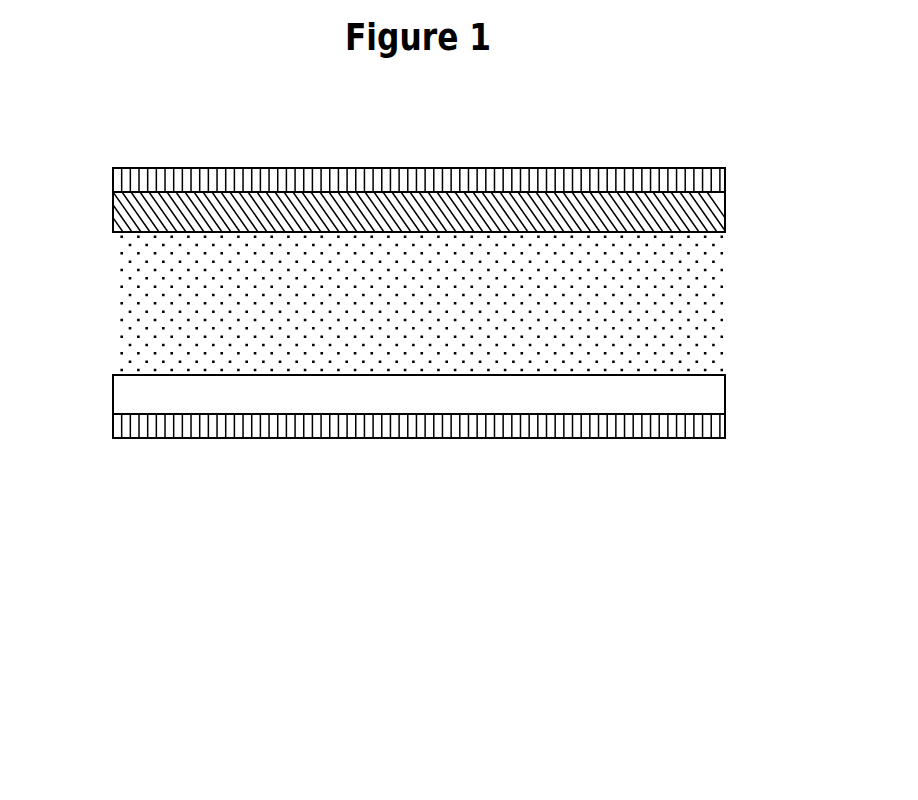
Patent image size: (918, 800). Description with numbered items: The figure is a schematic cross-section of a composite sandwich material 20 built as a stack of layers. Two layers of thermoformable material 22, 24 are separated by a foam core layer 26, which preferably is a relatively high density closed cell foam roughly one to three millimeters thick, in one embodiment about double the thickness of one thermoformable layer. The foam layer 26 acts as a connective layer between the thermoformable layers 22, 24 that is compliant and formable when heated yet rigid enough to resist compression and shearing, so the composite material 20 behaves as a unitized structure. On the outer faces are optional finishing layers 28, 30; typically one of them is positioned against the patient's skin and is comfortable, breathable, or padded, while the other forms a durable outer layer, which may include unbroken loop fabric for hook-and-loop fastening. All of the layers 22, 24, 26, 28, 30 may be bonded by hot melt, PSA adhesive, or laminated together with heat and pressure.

The composite sandwich material 20 is at (403, 335).
The layer of thermoformable material 22 is at (120, 208).
The layer of thermoformable material 24 is at (713, 392).
The foam core layer 26 is at (140, 343).
The finishing layer 28 is at (527, 178).
The finishing layer 30 is at (415, 422).